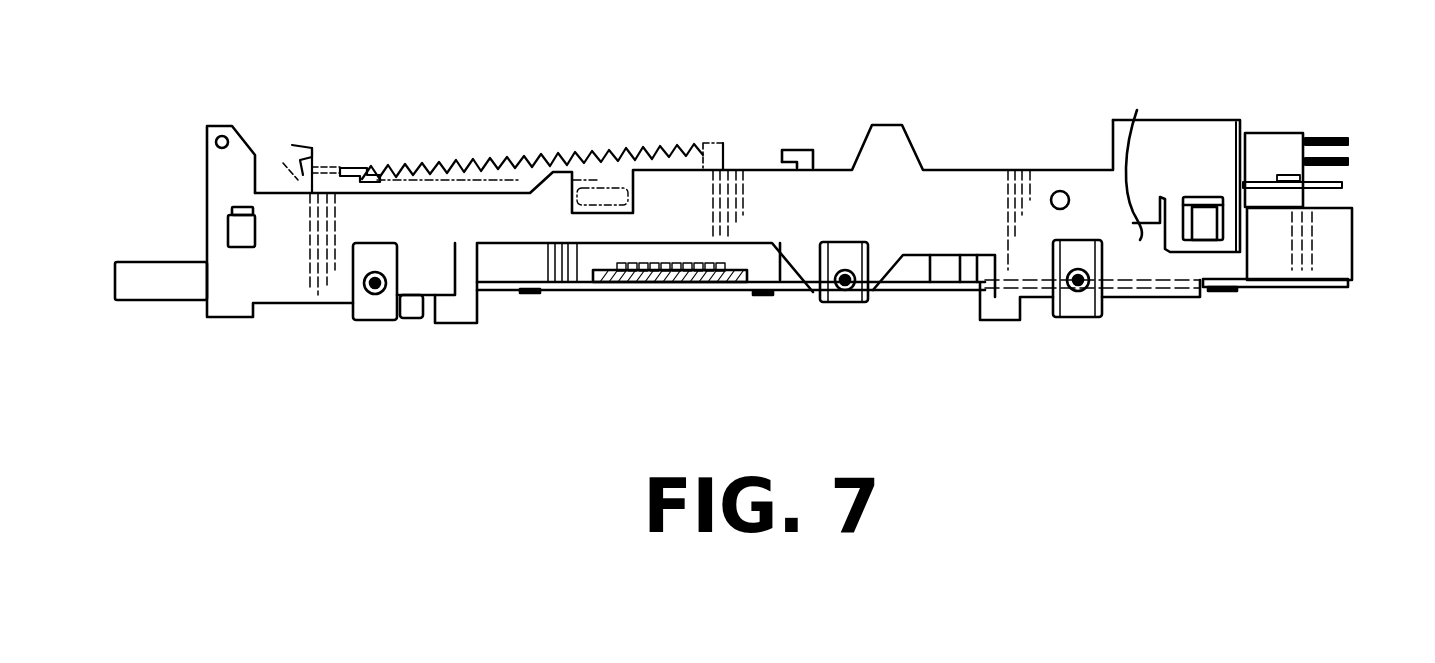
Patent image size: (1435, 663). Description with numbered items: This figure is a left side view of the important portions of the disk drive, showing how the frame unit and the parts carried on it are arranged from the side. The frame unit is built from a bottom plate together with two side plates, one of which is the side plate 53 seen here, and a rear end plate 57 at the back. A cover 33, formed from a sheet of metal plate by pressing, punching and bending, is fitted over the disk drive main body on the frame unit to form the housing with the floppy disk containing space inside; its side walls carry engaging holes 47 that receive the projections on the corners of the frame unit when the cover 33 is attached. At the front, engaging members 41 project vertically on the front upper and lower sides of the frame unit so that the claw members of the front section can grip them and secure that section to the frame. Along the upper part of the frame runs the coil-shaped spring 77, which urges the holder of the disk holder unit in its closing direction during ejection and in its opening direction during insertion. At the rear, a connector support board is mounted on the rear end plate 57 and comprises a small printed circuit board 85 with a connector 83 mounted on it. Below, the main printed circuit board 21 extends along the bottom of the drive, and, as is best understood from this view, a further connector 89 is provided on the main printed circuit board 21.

The main printed circuit board 21 is at (943, 283).
The cover 33 is at (1195, 120).
The engaging member 41 is at (245, 137).
The engaging hole 47 is at (1230, 290).
The side plate 53 is at (982, 170).
The rear end plate 57 is at (1247, 130).
The coil-shaped spring 77 is at (490, 153).
The connector 83 is at (1303, 130).
The small printed circuit board 85 is at (1345, 185).
The connector 89 is at (1323, 270).